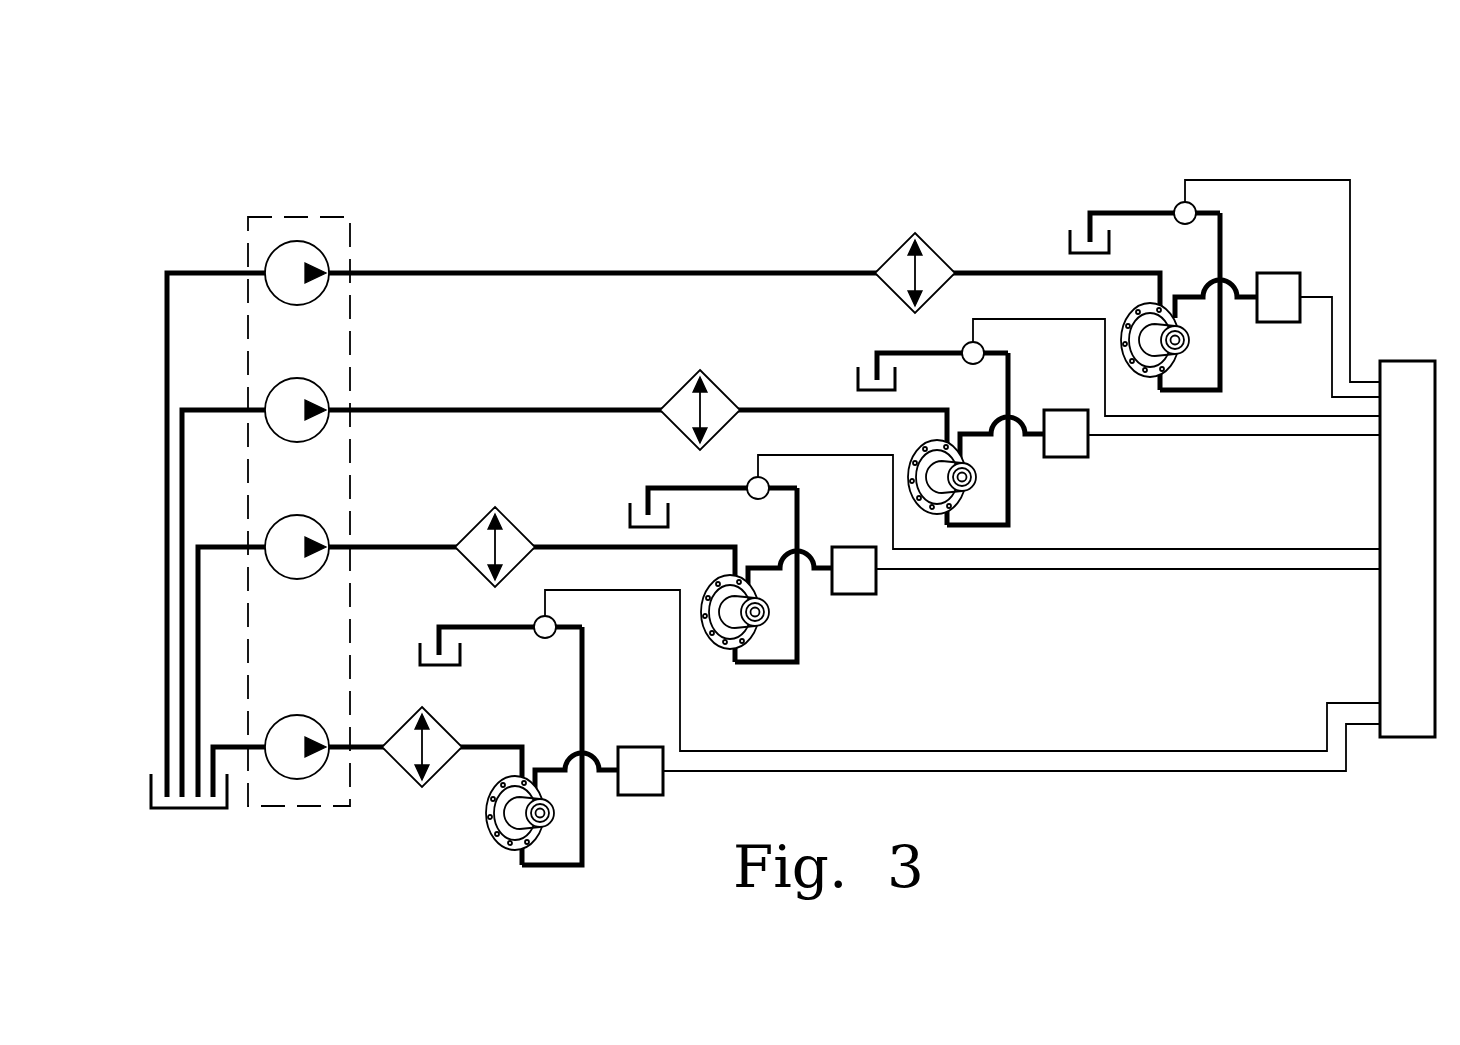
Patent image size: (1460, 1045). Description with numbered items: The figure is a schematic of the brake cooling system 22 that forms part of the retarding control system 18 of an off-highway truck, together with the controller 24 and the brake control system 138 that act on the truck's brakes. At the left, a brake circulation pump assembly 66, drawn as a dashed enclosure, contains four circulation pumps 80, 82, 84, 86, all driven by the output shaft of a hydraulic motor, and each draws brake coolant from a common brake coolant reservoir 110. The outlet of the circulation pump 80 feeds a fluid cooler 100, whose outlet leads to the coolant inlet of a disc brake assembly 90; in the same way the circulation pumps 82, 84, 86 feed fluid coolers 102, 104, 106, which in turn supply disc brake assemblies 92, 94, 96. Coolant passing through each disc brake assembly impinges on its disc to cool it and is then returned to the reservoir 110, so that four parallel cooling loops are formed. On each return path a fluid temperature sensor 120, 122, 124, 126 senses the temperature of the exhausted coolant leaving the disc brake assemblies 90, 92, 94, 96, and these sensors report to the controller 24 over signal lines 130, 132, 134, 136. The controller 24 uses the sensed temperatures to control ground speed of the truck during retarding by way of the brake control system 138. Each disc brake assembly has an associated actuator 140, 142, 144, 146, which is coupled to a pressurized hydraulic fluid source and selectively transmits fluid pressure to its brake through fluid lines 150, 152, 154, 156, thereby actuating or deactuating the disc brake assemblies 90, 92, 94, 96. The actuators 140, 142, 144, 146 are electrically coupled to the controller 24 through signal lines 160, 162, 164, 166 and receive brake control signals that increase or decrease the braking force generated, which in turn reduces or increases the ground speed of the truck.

The retarding control system 18 is at (1355, 112).
The brake cooling system 22 is at (1057, 140).
The controller 24 is at (1410, 362).
The brake circulation pump assembly 66 is at (345, 215).
The circulation pump 80 is at (303, 292).
The circulation pump 82 is at (303, 430).
The circulation pump 84 is at (303, 567).
The circulation pump 86 is at (297, 728).
The disc brake assembly 90 is at (1145, 318).
The disc brake assembly 92 is at (930, 452).
The disc brake assembly 94 is at (715, 587).
The disc brake assembly 96 is at (505, 778).
The fluid cooler 100 is at (930, 258).
The fluid cooler 102 is at (718, 395).
The fluid cooler 104 is at (515, 530).
The fluid cooler 106 is at (445, 735).
The brake coolant reservoir 110 is at (185, 808).
The fluid temperature sensor 120 is at (1190, 210).
The fluid temperature sensor 122 is at (984, 350).
The fluid temperature sensor 124 is at (768, 483).
The fluid temperature sensor 126 is at (556, 622).
The signal line 130 is at (1300, 180).
The signal line 132 is at (1225, 415).
The signal line 134 is at (1120, 548).
The signal line 136 is at (935, 750).
The brake control system 138 is at (1298, 247).
The actuator 140 is at (1283, 322).
The actuator 142 is at (1072, 457).
The actuator 144 is at (858, 594).
The actuator 146 is at (645, 795).
The fluid line 150 is at (1225, 285).
The fluid line 152 is at (1022, 432).
The fluid line 154 is at (813, 566).
The fluid line 156 is at (603, 768).
The signal line 160 is at (1330, 386).
The signal line 162 is at (1243, 437).
The signal line 164 is at (1135, 570).
The signal line 166 is at (955, 772).